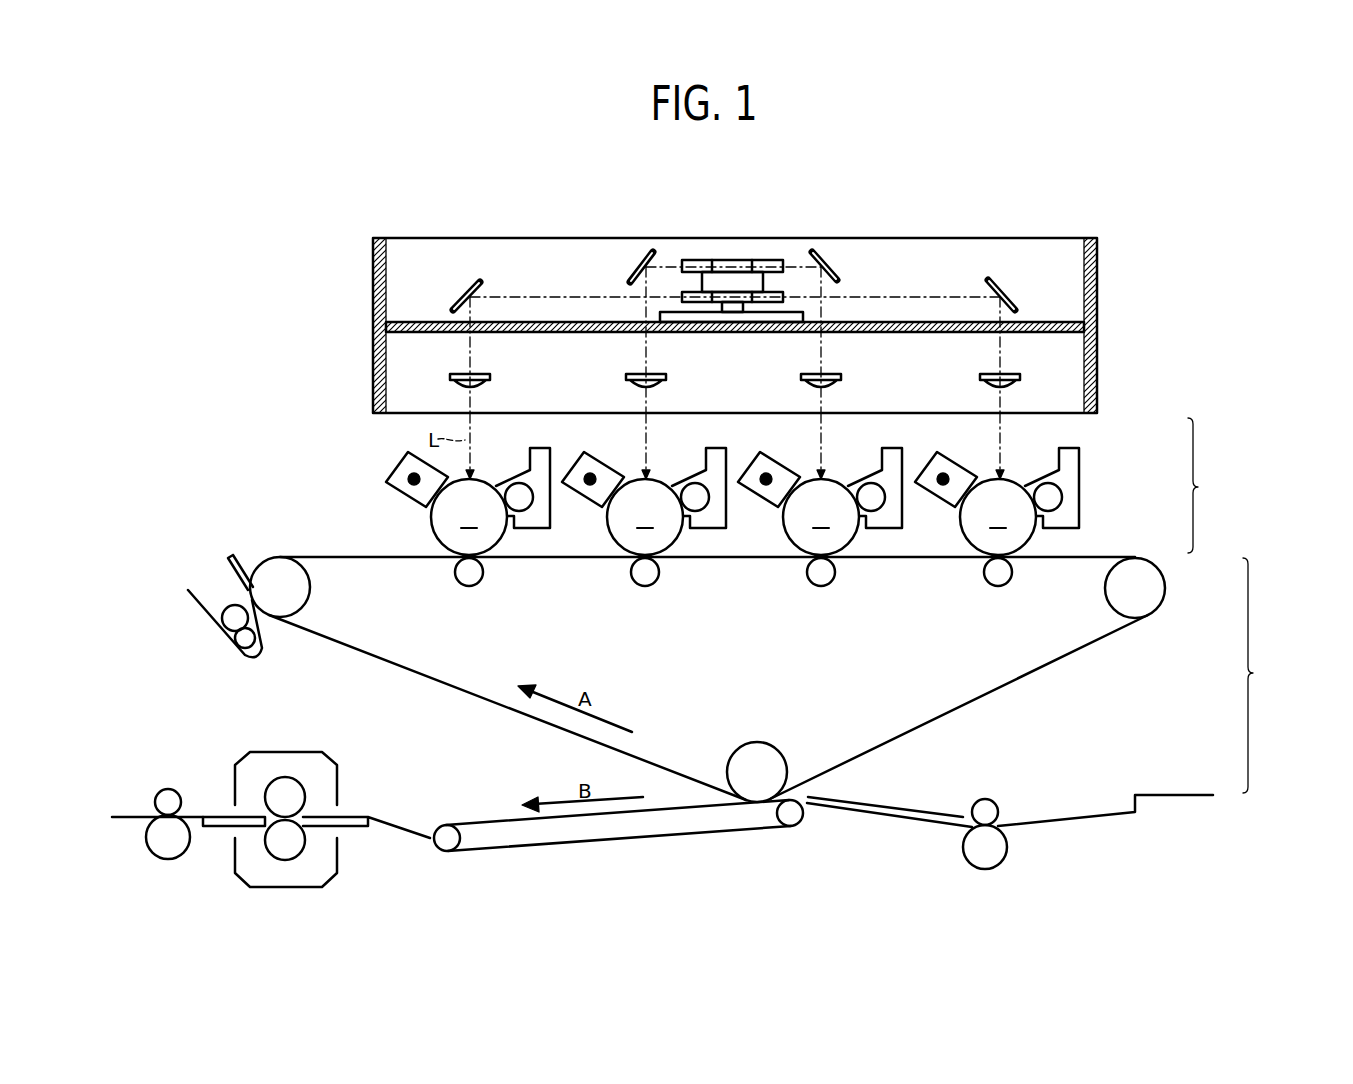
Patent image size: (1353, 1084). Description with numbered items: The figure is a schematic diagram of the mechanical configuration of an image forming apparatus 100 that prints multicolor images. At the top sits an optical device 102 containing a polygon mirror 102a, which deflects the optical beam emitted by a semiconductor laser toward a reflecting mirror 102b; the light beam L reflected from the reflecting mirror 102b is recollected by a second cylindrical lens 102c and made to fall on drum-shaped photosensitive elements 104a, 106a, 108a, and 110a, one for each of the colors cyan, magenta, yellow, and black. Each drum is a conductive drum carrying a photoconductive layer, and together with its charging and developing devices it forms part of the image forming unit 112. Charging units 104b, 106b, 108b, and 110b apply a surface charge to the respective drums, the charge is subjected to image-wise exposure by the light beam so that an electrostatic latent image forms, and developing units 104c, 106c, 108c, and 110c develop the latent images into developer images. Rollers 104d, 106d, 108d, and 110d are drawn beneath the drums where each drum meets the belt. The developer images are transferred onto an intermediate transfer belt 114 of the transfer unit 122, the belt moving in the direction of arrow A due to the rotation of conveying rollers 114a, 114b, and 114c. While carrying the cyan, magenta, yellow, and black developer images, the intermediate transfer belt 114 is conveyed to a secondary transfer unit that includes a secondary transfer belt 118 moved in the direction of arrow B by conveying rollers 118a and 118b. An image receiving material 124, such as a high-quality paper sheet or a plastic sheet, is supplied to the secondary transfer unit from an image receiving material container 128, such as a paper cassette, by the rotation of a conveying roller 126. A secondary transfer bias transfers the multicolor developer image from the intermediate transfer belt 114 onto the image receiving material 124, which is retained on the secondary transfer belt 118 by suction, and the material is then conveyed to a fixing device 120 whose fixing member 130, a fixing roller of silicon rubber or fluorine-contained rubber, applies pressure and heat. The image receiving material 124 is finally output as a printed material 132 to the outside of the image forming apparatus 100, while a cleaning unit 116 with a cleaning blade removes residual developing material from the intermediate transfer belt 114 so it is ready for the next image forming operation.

The image forming apparatus 100 is at (1166, 212).
The optical device 102 is at (1097, 292).
The polygon mirror 102a is at (764, 258).
The reflecting mirror 102b is at (460, 292).
The second cylindrical lens 102c is at (482, 383).
The drum-shaped photosensitive element 104a is at (1020, 542).
The charging unit 104b is at (943, 485).
The developing unit 104c is at (1043, 477).
The primary transfer roller (M) 104d is at (1001, 580).
The drum-shaped photosensitive element 106a is at (843, 542).
The charging unit 106b is at (766, 485).
The developing unit 106c is at (866, 477).
The primary transfer roller (C) 106d is at (824, 580).
The drum-shaped photosensitive element 108a is at (667, 542).
The charging unit 108b is at (590, 485).
The developing unit 108c is at (690, 477).
The primary transfer roller (Y) 108d is at (648, 580).
The drum-shaped photosensitive element 110a is at (491, 542).
The charging unit 110b is at (414, 485).
The developing unit 110c is at (514, 477).
The primary transfer roller (K) 110d is at (472, 580).
The image forming unit 112 is at (1211, 485).
The intermediate transfer belt 114 is at (740, 560).
The conveying roller 114a is at (1160, 585).
The conveying roller 114b is at (775, 755).
The conveying roller 114c is at (309, 585).
The cleaning unit 116 is at (262, 651).
The secondary transfer belt 118 is at (645, 840).
The conveying roller 118a is at (790, 821).
The conveying roller 118b is at (447, 846).
The fixing device 120 is at (327, 781).
The transfer unit 122 is at (1266, 675).
The image receiving material 124 is at (897, 803).
The conveying roller 126 is at (1008, 845).
The image receiving material container 128 is at (1170, 792).
The fixing member 130 is at (287, 778).
The printed material 132 is at (127, 815).